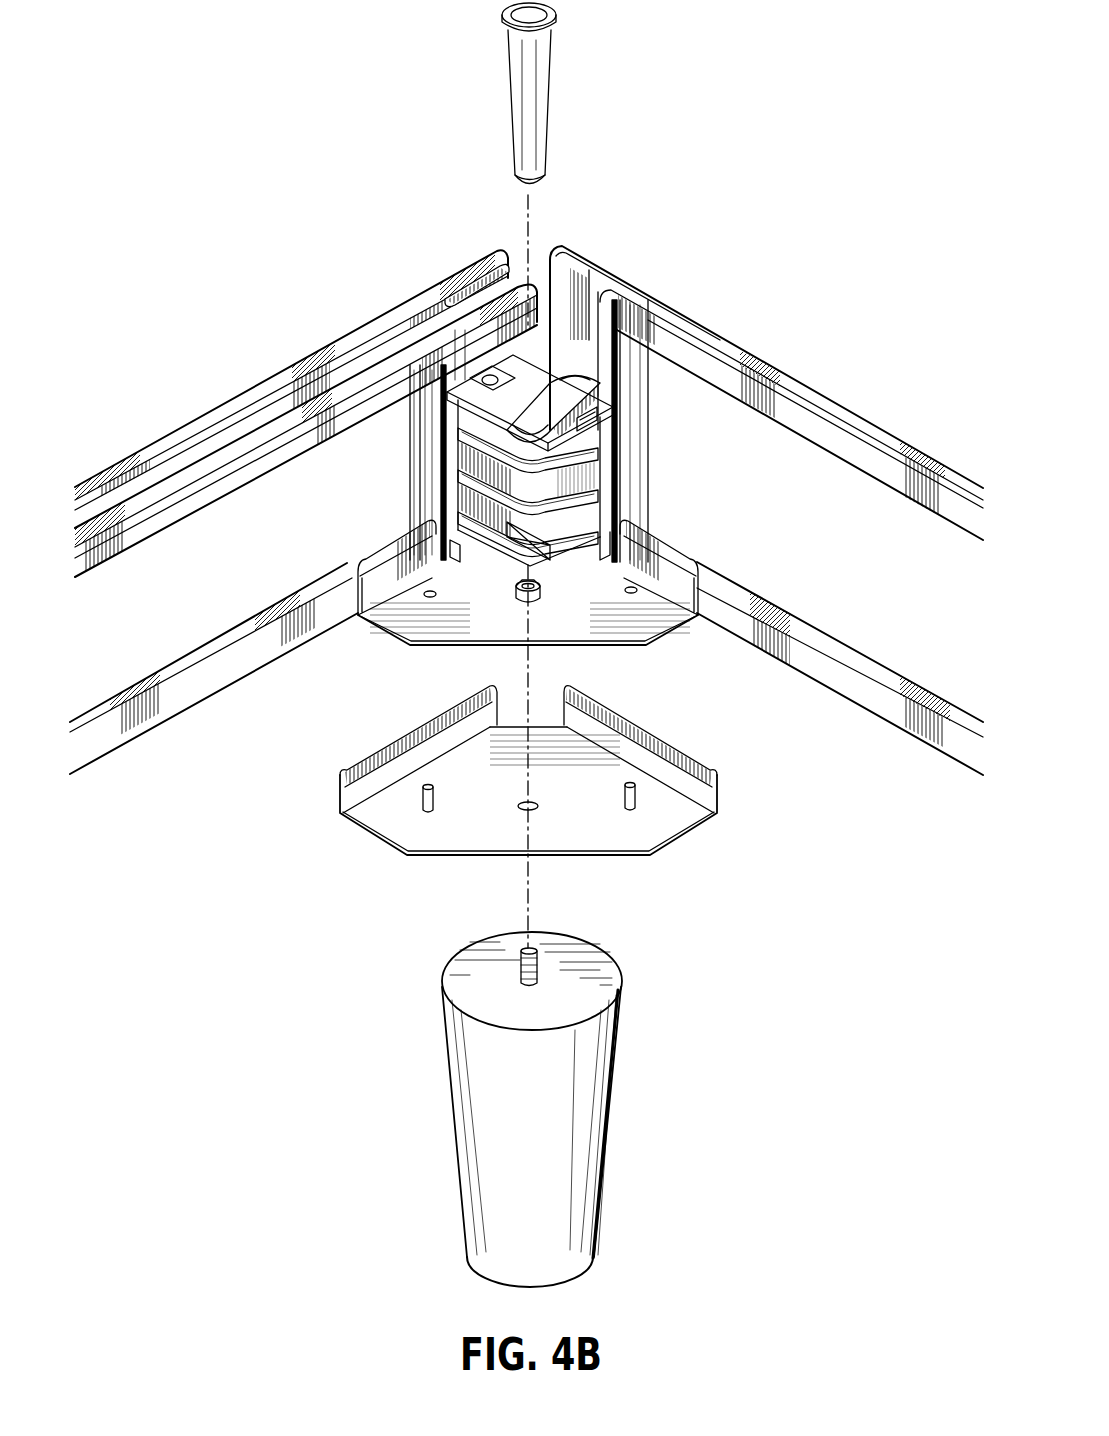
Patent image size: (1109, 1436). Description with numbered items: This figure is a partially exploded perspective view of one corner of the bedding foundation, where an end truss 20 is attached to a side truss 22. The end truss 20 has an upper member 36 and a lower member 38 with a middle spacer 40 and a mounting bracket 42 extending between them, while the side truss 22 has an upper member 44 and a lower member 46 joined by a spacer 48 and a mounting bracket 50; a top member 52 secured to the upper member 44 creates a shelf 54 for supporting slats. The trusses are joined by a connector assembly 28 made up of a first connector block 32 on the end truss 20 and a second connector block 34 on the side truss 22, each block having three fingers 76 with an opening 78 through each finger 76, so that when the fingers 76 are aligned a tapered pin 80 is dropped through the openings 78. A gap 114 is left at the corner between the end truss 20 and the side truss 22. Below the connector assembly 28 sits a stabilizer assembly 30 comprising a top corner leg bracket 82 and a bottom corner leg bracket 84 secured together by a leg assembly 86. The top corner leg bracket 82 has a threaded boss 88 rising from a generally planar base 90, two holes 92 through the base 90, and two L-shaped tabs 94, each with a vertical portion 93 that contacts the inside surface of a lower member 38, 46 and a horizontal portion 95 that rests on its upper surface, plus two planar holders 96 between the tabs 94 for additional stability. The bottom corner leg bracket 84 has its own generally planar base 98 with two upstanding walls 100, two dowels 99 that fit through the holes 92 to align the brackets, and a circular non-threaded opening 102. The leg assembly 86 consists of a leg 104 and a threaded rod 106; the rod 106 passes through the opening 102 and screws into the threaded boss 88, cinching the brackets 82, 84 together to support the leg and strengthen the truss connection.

The end truss 20 is at (805, 372).
The side truss 22 is at (158, 432).
The connector assembly 28 is at (642, 454).
The stabilizer assembly 30 is at (692, 847).
The first connector block 32 is at (630, 427).
The second connector block 34 is at (434, 460).
The upper member 36 is at (766, 385).
The lower member 38 is at (873, 697).
The middle spacer 40 is at (643, 366).
The mounting bracket 42 is at (599, 296).
The upper member 44 is at (148, 530).
The lower member 46 is at (163, 717).
The spacer 48 is at (412, 438).
The mounting bracket 50 is at (455, 297).
The top member 52 is at (236, 393).
The shelf 54 is at (306, 412).
The finger 76 is at (600, 522).
The opening 78 is at (541, 398).
The tapered pin 80 is at (512, 107).
The top corner leg bracket 82 is at (533, 590).
The bottom corner leg bracket 84 is at (530, 793).
The leg assembly 86 is at (554, 1094).
The threaded boss 88 is at (541, 592).
The generally planar base 90 is at (640, 623).
The hole 92 is at (437, 595).
The vertical portion 93 is at (356, 592).
The tab 94 is at (370, 563).
The horizontal portion 95 is at (372, 555).
The holder 96 is at (447, 547).
The generally planar base 98 is at (592, 804).
The dowel 99 is at (434, 788).
The wall 100 is at (367, 763).
The circular non-threaded opening 102 is at (538, 808).
The leg 104 is at (605, 1090).
The threaded rod 106 is at (526, 952).
The gap 114 is at (534, 244).